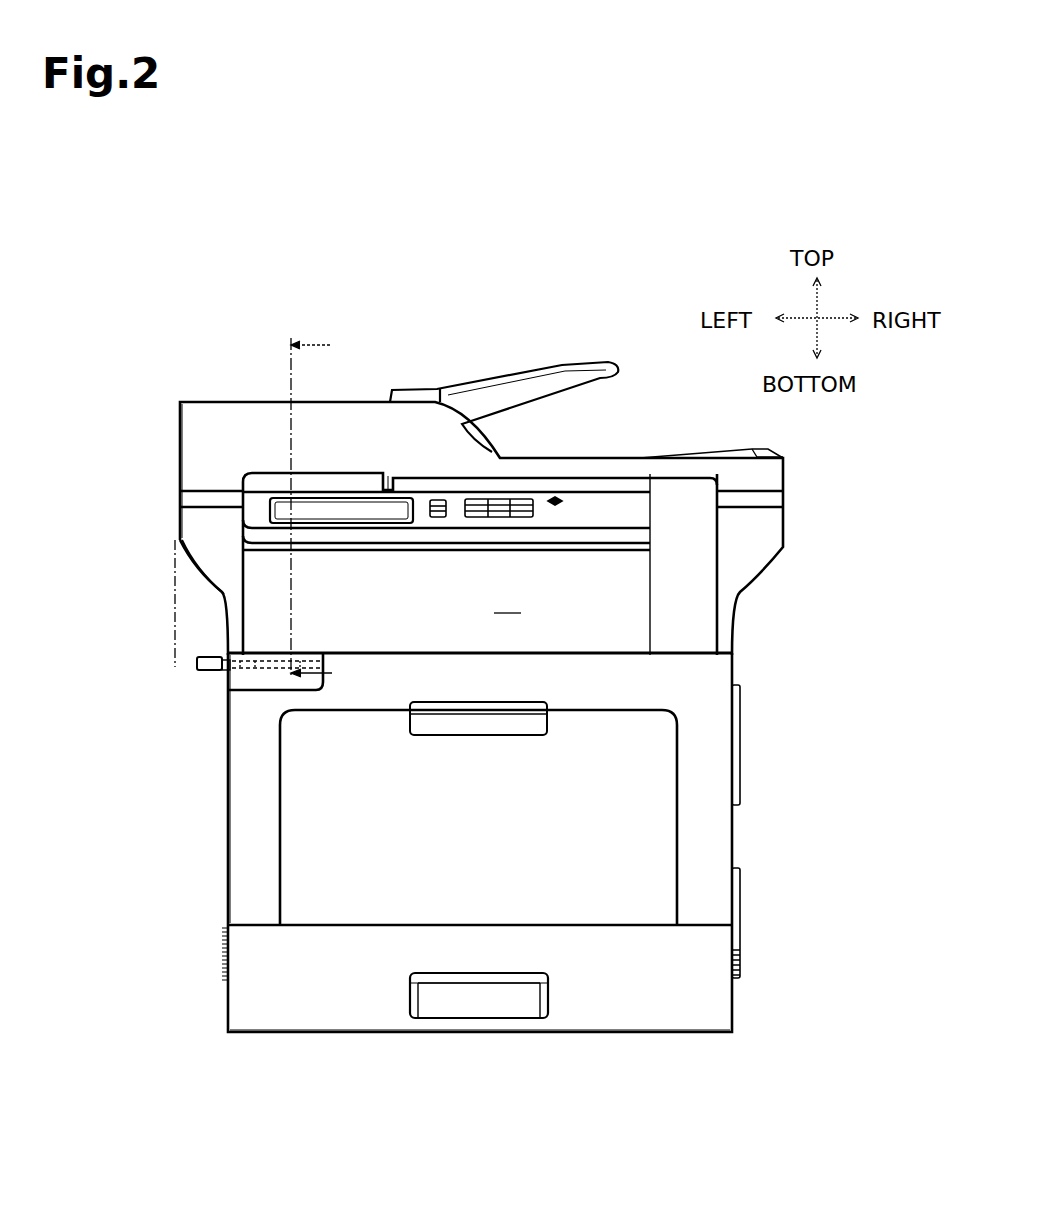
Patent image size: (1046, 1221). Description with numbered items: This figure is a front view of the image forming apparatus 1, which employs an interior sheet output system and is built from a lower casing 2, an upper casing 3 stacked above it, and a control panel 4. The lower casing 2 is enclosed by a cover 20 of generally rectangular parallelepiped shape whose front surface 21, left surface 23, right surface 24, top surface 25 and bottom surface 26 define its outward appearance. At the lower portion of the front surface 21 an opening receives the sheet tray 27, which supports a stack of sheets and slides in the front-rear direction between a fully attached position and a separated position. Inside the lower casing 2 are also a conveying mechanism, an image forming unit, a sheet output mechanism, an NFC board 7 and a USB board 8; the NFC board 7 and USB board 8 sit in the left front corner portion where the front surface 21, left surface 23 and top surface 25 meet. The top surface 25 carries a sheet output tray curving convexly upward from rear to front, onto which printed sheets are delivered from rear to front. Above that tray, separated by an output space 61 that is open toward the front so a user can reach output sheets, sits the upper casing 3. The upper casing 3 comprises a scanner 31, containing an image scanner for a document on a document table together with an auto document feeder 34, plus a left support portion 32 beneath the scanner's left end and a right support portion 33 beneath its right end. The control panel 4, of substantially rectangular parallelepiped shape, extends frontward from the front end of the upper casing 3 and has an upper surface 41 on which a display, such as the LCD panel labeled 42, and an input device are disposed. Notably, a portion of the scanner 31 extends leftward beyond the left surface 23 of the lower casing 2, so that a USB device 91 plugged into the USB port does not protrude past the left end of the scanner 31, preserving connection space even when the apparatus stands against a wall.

The image forming apparatus 1 is at (185, 362).
The lower casing 2 is at (216, 791).
The upper casing 3 is at (172, 422).
The control panel 4 is at (594, 496).
The NFC board 7 is at (272, 686).
The USB board 8 is at (236, 674).
The cover 20 is at (220, 861).
The front surface 21 is at (240, 824).
The left surface 23 is at (227, 890).
The right surface 24 is at (735, 830).
The top surface 25 is at (385, 652).
The bottom surface 26 is at (240, 1034).
The sheet tray 27 is at (233, 992).
The scanner 31 is at (180, 461).
The left support portion 32 is at (234, 603).
The right support portion 33 is at (662, 626).
The auto document feeder 34 is at (370, 400).
The upper surface 41 is at (638, 500).
The display 42 is at (326, 538).
The output space 61 is at (446, 602).
The USB device 91 is at (197, 664).